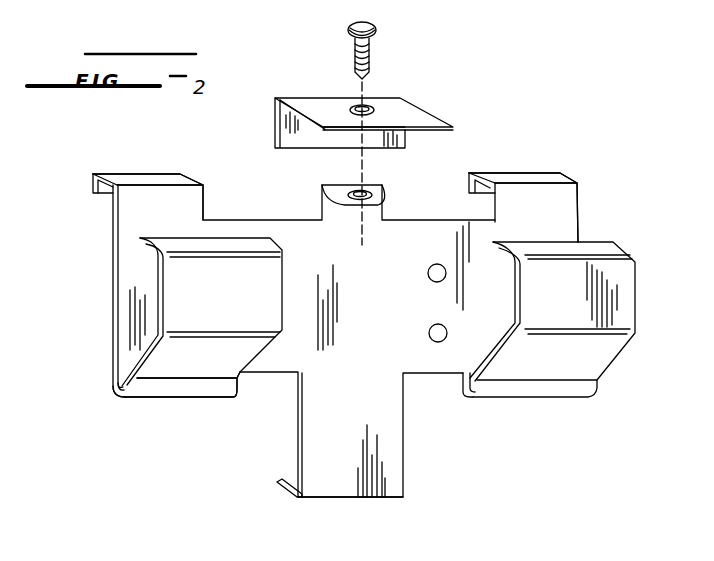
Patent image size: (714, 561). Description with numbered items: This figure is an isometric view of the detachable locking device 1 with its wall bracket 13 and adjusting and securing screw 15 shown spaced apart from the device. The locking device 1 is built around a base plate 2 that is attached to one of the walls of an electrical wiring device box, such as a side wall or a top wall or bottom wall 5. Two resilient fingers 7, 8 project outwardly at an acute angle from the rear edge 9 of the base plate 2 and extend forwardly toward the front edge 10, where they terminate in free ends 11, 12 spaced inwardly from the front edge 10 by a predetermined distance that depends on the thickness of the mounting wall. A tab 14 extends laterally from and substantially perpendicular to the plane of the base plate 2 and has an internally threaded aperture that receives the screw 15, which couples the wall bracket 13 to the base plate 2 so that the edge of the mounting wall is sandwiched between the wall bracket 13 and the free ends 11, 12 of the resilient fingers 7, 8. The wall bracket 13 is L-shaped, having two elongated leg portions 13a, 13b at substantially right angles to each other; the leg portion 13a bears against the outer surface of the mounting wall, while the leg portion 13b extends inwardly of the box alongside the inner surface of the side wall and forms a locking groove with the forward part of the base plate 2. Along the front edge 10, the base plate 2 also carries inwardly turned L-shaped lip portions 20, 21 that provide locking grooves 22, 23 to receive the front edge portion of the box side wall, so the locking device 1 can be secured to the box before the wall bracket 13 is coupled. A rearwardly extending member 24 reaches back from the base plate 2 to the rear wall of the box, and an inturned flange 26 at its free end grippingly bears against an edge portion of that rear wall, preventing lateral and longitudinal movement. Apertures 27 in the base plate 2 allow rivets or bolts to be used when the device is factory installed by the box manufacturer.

The detachable locking device 1 is at (164, 150).
The base plate 2 is at (420, 360).
The bottom wall 5 is at (343, 1).
The resilient finger 7 is at (151, 387).
The resilient finger 8 is at (592, 360).
The rear edge 9 is at (202, 397).
The front edge 10 is at (133, 174).
The free end 11 is at (163, 242).
The free end 12 is at (593, 247).
The wall bracket 13 is at (308, 96).
The elongated leg portion 13a is at (392, 112).
The elongated leg portion 13b is at (405, 144).
The tab 14 is at (373, 200).
The adjusting and securing screw 15 is at (372, 27).
The L-shaped lip portion 20 is at (92, 173).
The L-shaped lip portion 21 is at (470, 174).
The locking groove 22 is at (97, 192).
The locking groove 23 is at (487, 193).
The rearwardly extending member 24 is at (393, 493).
The inturned flange 26 is at (280, 472).
The apertures 27 is at (663, 365).